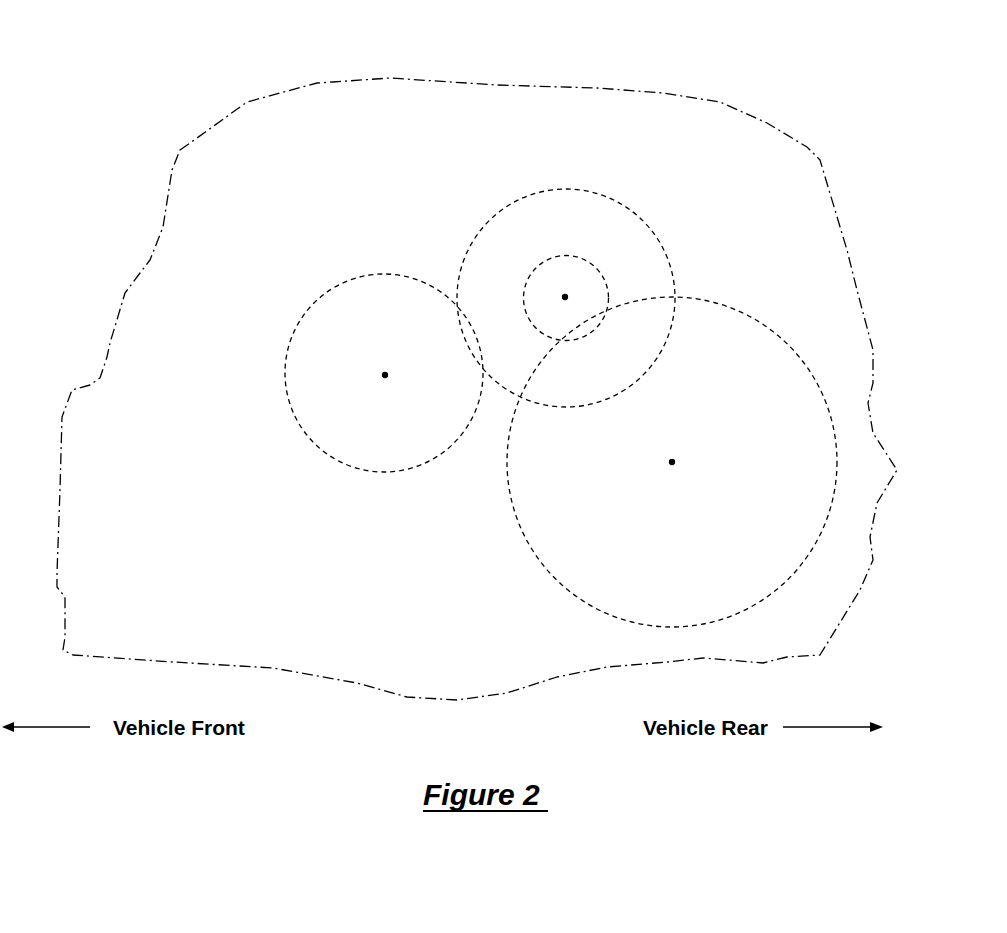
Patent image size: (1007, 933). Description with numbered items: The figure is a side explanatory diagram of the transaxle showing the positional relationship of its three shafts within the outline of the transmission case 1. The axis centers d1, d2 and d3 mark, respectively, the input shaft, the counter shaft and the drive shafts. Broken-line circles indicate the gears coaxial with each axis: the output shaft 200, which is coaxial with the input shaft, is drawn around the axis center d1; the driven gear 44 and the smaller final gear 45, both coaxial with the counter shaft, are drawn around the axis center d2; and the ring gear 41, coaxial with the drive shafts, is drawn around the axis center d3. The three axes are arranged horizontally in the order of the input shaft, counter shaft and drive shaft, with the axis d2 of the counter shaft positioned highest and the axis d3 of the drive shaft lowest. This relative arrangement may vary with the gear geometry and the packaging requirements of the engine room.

The transmission case 1 is at (848, 250).
The output shaft 200 is at (383, 472).
The axis center of the input shaft d1 is at (385, 376).
The driven gear 44 is at (637, 212).
The final gear 45 is at (535, 267).
The axis center of the counter shaft d2 is at (566, 297).
The ring gear 41 is at (533, 556).
The axis center of the drive shafts d3 is at (672, 463).